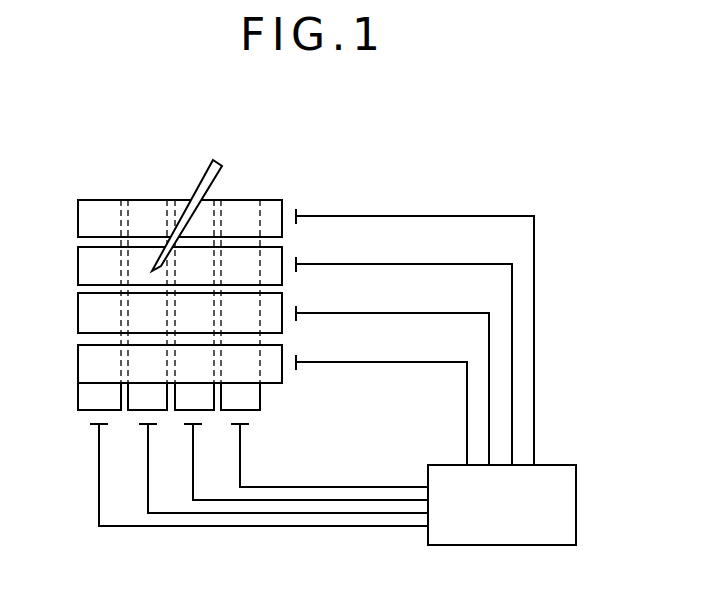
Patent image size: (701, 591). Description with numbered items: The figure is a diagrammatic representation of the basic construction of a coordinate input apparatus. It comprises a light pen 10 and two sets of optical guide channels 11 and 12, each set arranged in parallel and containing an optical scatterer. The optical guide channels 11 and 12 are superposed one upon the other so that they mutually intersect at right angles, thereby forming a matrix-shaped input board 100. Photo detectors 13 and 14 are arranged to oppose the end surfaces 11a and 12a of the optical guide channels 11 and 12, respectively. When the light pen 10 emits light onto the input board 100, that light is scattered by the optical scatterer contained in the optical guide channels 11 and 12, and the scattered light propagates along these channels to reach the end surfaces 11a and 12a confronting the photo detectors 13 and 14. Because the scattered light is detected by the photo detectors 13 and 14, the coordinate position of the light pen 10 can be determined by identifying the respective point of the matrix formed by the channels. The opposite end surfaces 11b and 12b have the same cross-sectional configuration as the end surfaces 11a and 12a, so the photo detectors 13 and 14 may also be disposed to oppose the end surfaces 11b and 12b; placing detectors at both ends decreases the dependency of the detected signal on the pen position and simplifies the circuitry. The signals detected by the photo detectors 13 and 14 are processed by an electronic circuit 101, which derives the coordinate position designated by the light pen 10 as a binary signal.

The light pen 10 is at (206, 166).
The optical guide channel 11 is at (269, 205).
The end surface 11a is at (283, 210).
The end surface 11b is at (78, 222).
The optical guide channel 12 is at (88, 393).
The end surface 12a is at (90, 412).
The end surface 12b is at (102, 200).
The photo detector 13 is at (298, 213).
The photo detector 14 is at (93, 426).
The input board 100 is at (78, 290).
The electronic circuit 101 is at (571, 465).